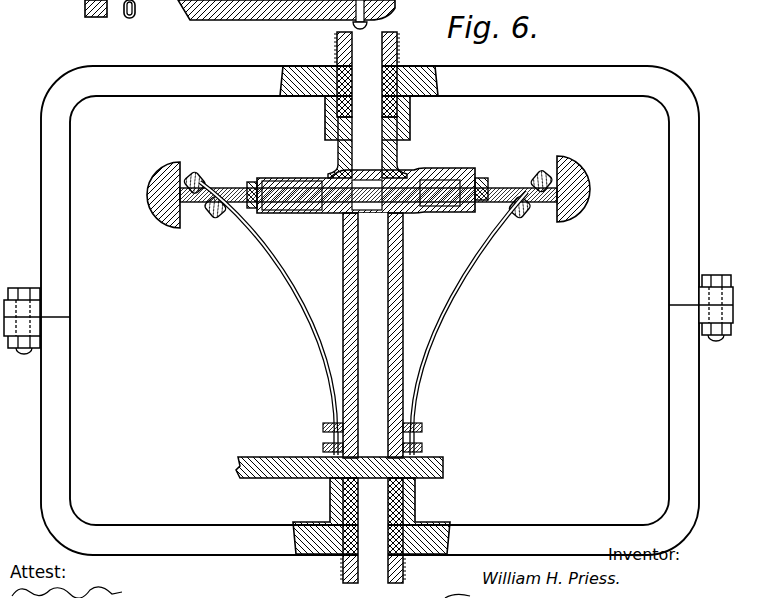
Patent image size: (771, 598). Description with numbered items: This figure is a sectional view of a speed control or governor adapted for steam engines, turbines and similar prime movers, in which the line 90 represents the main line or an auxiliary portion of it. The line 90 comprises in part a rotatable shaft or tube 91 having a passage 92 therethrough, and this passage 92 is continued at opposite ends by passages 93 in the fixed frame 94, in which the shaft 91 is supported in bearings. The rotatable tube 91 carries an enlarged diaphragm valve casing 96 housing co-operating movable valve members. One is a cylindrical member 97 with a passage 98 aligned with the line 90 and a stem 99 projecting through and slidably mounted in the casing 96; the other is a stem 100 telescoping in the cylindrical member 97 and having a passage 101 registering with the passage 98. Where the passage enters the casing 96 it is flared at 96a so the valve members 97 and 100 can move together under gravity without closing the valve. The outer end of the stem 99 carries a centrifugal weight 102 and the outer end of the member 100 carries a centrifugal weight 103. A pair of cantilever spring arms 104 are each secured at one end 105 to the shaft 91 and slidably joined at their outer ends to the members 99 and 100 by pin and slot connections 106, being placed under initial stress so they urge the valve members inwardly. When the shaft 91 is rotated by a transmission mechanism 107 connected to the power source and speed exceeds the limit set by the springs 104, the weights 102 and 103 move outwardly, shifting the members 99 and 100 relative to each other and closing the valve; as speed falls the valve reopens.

The line 90 is at (371, 349).
The rotatable shaft or tube 91 is at (395, 300).
The passage 92 is at (375, 383).
The passages 93 is at (367, 69).
The fixed frame 94 is at (535, 80).
The diaphragm valve casing 96 is at (446, 168).
The flared portion 96a is at (358, 174).
The cylindrical member 97 is at (418, 214).
The passage 98 is at (370, 212).
The stem 99 is at (481, 188).
The stem 100 is at (296, 214).
The passage 101 is at (337, 214).
The centrifugal weight 102 is at (580, 187).
The centrifugal weight 103 is at (162, 227).
The spring arms 104 is at (267, 268).
The secured end 105 is at (323, 447).
The pin and slot connections 106 is at (206, 183).
The transmission mechanism 107 is at (445, 466).